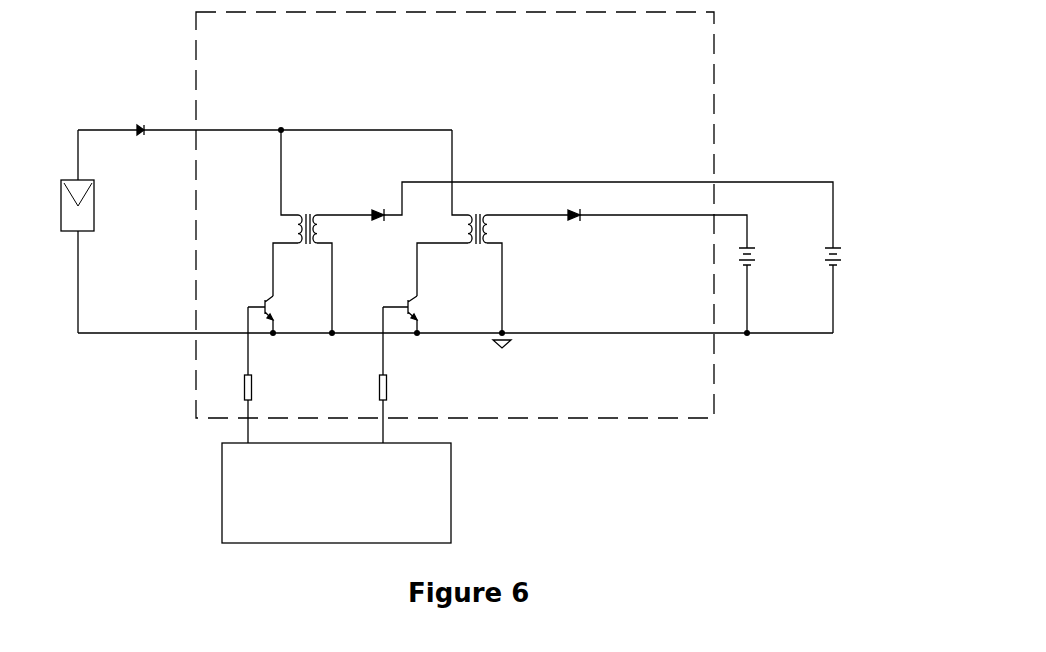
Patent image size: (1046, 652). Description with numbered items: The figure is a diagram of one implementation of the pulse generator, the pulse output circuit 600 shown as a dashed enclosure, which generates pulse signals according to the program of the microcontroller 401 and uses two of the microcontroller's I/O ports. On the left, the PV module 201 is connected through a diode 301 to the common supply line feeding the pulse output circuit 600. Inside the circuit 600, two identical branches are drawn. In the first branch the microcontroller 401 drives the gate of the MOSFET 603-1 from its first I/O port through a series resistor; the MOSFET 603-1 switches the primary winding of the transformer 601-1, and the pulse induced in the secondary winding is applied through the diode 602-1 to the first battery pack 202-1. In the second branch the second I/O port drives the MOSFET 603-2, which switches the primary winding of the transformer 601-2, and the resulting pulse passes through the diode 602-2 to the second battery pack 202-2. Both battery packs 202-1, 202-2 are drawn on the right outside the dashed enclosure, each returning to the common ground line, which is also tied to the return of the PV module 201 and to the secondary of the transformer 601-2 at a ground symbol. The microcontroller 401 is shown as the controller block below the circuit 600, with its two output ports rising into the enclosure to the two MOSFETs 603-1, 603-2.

The PV module 201 is at (78, 197).
The diode 301 is at (140, 120).
The pulse output circuit 600 is at (455, 215).
The transformer 601-1 is at (273, 220).
The transformer 601-2 is at (486, 220).
The diode 602-1 is at (367, 205).
The diode 602-2 is at (579, 204).
The MOSFET 603-1 is at (247, 362).
The MOSFET 603-2 is at (421, 366).
The battery pack 202-1 is at (853, 248).
The battery pack 202-2 is at (767, 248).
The microcontroller 401 is at (336, 493).